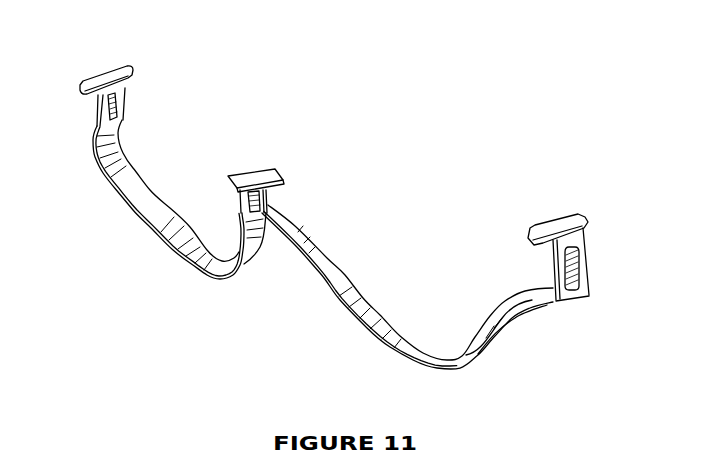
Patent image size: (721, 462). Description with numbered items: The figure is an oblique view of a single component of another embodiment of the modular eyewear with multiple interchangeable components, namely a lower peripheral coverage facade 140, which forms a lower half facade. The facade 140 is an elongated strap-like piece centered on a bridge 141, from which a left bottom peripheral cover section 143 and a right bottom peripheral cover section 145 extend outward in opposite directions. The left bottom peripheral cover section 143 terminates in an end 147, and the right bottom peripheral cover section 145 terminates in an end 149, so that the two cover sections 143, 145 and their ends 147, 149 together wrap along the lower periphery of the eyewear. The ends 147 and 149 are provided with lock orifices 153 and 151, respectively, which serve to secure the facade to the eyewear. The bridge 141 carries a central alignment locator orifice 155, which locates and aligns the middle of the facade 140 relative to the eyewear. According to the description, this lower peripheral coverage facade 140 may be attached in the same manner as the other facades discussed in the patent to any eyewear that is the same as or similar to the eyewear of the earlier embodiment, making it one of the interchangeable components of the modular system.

The lower peripheral coverage facade 140 is at (374, 170).
The bridge 141 is at (258, 170).
The left bottom peripheral cover section 143 is at (130, 205).
The right bottom peripheral cover section 145 is at (360, 320).
The end 147 is at (152, 73).
The end 149 is at (608, 236).
The lock orifice 151 is at (573, 260).
The lock orifice 153 is at (127, 90).
The central alignment locator orifice 155 is at (239, 211).